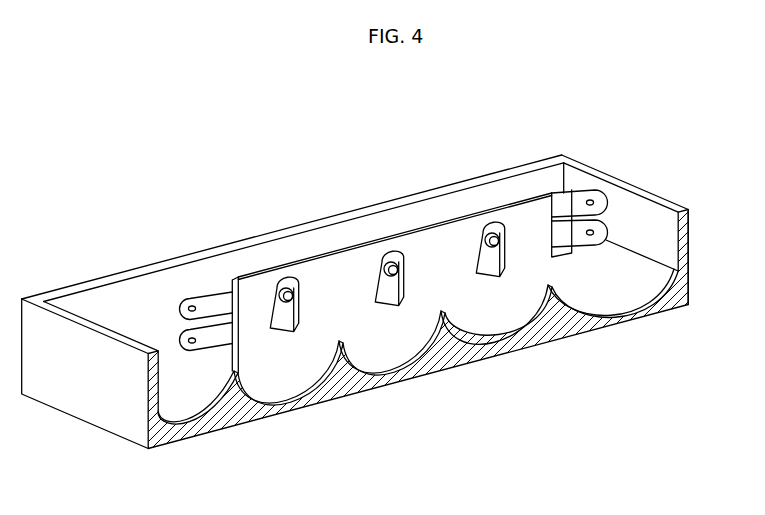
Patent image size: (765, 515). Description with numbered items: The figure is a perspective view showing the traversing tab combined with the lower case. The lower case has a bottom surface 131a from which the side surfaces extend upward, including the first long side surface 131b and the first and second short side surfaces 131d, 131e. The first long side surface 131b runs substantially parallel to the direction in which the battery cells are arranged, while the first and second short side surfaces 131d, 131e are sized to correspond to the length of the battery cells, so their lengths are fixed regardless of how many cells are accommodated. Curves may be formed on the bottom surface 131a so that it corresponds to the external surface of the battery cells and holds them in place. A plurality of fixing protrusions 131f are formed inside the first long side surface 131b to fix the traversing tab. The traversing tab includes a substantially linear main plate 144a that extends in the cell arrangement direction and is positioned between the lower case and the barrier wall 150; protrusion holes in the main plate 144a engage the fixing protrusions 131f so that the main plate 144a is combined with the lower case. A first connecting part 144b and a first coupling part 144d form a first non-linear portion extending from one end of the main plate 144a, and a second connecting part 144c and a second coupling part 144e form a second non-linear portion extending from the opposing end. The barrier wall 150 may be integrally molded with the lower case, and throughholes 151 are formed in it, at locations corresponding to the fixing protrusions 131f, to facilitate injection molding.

The bottom surface 131a is at (267, 400).
The first long side surface 131b is at (101, 300).
The first short side surface 131d is at (149, 394).
The second short side surface 131e is at (655, 218).
The fixing protrusions 131f is at (493, 238).
The main plate 144a is at (288, 313).
The first connecting part 144b is at (200, 297).
The second connecting part 144c is at (580, 194).
The first coupling part 144d is at (229, 291).
The second coupling part 144e is at (556, 198).
The barrier wall 150 is at (413, 247).
The throughholes 151 is at (504, 243).